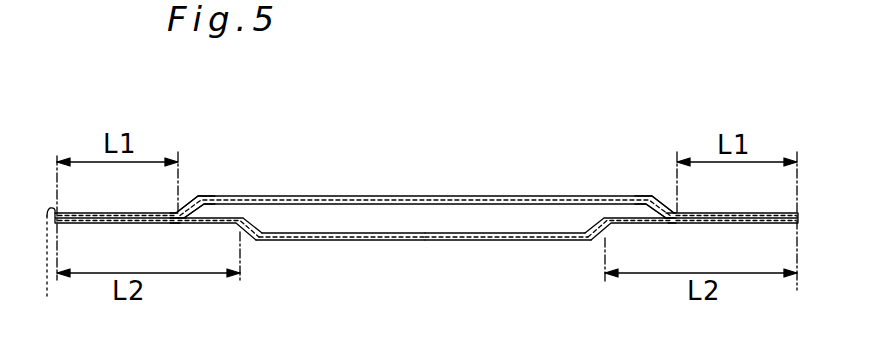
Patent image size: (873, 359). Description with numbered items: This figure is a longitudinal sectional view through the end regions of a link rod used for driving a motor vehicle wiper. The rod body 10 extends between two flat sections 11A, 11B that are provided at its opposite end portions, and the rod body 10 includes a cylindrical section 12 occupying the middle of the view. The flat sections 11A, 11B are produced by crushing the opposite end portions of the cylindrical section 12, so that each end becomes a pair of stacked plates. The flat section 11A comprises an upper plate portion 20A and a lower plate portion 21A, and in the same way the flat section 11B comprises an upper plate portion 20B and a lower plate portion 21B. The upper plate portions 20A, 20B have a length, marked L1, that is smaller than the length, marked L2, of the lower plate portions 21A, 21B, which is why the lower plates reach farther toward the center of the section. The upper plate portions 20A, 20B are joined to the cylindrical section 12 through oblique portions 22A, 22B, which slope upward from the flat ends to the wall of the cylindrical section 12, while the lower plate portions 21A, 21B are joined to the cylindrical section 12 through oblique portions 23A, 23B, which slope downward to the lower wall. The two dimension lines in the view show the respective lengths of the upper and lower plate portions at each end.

The rod body 10 is at (345, 197).
The cylindrical section 12 is at (430, 205).
The flat section 11A is at (47, 300).
The flat section 11B is at (798, 213).
The upper plate portion 20A is at (187, 212).
The upper plate portion 20B is at (668, 210).
The lower plate portion 21A is at (180, 226).
The lower plate portion 21B is at (684, 246).
The oblique portion 22A is at (192, 200).
The oblique portion 22B is at (662, 208).
The oblique portion 23A is at (252, 242).
The oblique portion 23B is at (594, 242).